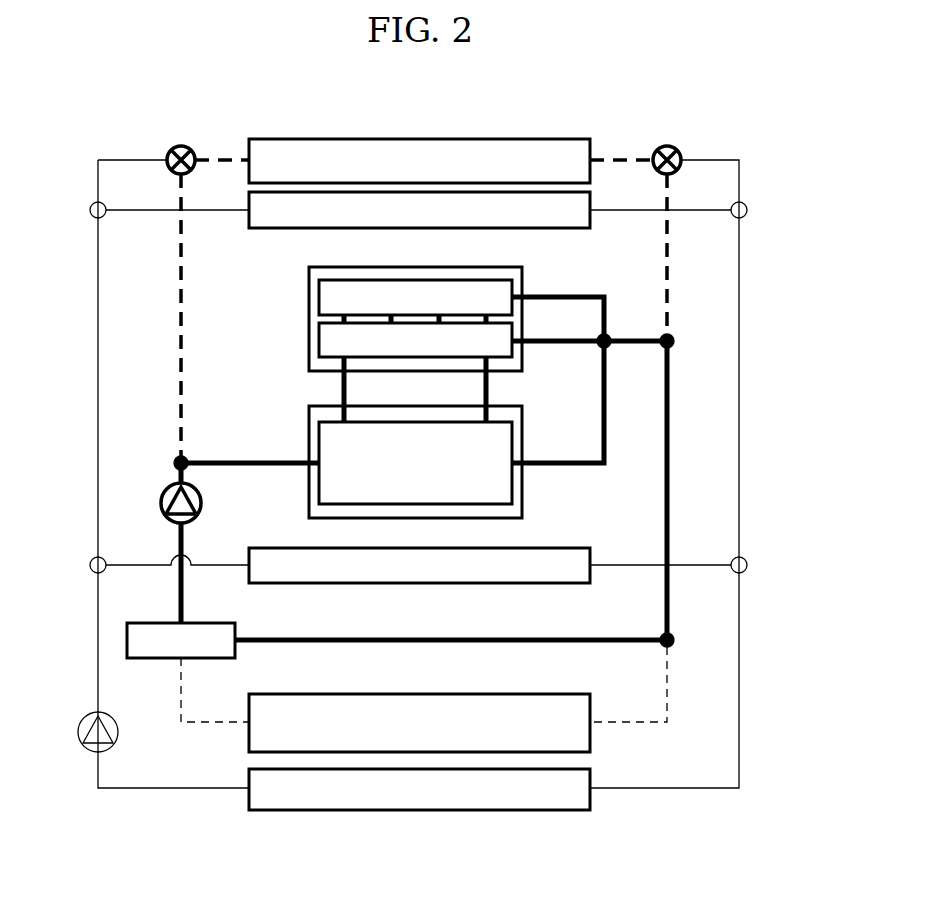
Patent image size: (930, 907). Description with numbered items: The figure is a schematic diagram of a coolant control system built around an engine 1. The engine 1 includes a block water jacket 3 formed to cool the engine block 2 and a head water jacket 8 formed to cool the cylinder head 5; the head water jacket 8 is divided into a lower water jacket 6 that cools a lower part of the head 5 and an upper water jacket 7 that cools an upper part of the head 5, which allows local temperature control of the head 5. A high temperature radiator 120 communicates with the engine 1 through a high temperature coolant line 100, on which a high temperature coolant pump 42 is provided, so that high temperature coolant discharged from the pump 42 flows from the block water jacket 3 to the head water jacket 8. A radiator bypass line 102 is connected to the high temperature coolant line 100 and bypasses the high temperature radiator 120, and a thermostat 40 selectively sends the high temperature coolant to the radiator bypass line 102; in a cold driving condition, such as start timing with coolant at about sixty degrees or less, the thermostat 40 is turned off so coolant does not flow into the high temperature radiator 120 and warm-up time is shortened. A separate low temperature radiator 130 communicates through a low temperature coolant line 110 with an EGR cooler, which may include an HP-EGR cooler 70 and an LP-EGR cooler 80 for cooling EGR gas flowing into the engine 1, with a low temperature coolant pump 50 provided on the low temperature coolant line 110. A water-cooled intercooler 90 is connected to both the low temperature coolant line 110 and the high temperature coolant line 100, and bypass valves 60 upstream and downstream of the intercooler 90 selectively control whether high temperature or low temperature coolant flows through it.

The engine 1 is at (416, 395).
The engine block 2 is at (522, 420).
The block water jacket 3 is at (319, 437).
The cylinder head 5 is at (522, 358).
The lower water jacket 6 is at (384, 340).
The upper water jacket 7 is at (319, 297).
The head water jacket 8 is at (370, 315).
The thermostat 40 is at (127, 640).
The high temperature coolant pump 42 is at (166, 489).
The low temperature coolant pump 50 is at (110, 728).
The bypass valve 60 is at (184, 146).
The HP-EGR cooler 70 is at (270, 548).
The LP-EGR cooler 80 is at (575, 230).
The water-cooled intercooler 90 is at (511, 139).
The high temperature coolant line 100 is at (667, 420).
The radiator bypass line 102 is at (619, 638).
The low temperature coolant line 110 is at (739, 467).
The high temperature radiator 120 is at (528, 694).
The low temperature radiator 130 is at (548, 812).